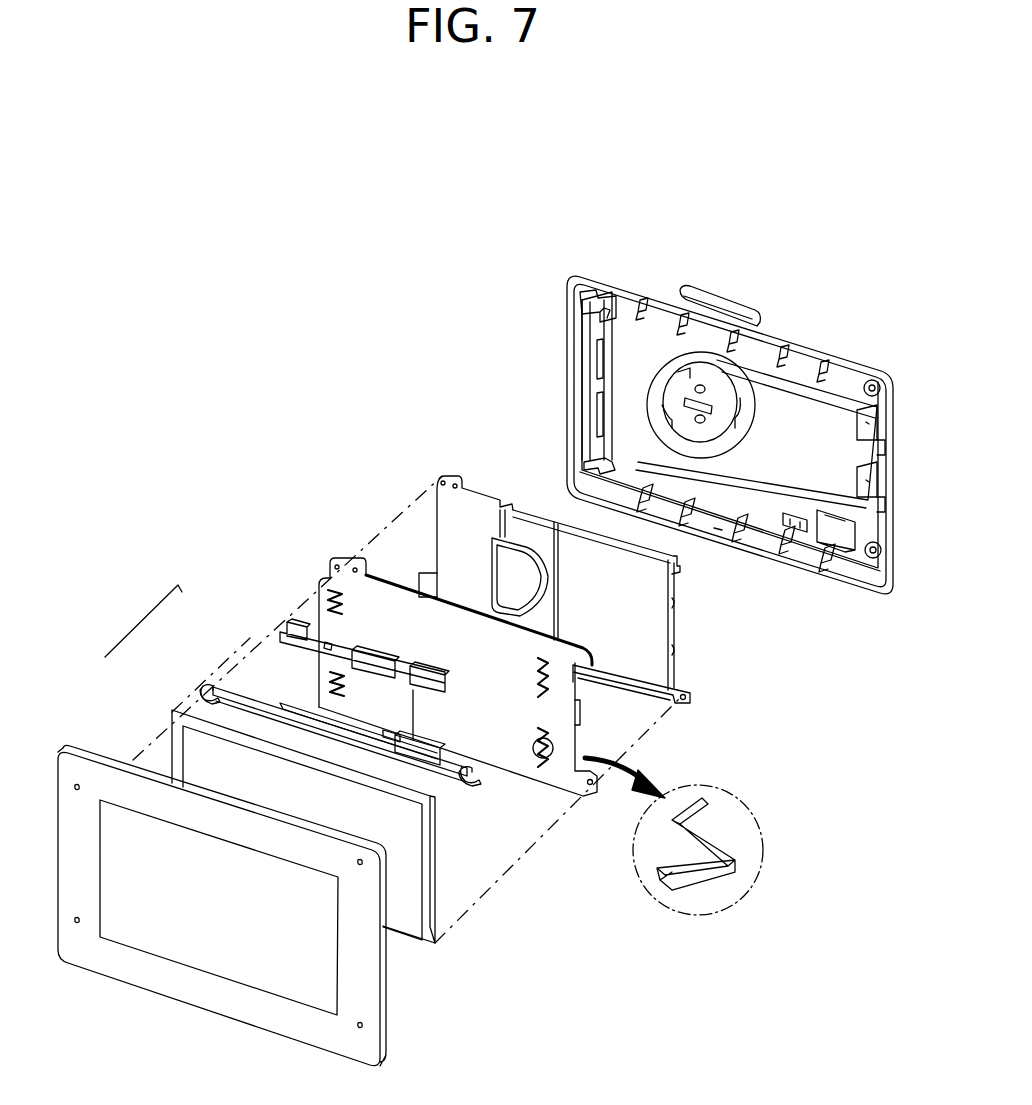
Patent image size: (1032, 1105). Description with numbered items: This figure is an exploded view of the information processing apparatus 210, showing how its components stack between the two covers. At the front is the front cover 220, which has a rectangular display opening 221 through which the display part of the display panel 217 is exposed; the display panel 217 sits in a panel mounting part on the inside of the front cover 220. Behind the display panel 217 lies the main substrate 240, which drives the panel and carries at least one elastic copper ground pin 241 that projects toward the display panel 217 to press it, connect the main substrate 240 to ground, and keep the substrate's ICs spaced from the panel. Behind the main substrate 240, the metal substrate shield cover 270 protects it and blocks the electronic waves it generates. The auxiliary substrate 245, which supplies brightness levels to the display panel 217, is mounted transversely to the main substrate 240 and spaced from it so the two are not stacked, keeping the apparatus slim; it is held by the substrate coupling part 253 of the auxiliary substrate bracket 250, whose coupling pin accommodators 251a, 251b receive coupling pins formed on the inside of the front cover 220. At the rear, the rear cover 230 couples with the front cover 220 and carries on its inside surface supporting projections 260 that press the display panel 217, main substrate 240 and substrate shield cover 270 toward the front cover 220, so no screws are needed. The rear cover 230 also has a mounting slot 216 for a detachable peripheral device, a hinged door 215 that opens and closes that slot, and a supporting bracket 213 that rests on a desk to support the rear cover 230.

The information processing apparatus 210 is at (200, 308).
The supporting bracket 213 is at (700, 300).
The door 215 is at (587, 322).
The mounting slot 216 is at (597, 415).
The display panel 217 is at (437, 910).
The front cover 220 is at (280, 1044).
The display opening 221 is at (190, 956).
The rear cover 230 is at (596, 375).
The main substrate 240 is at (582, 718).
The ground pin 241 is at (735, 846).
The auxiliary substrate 245 is at (280, 634).
The auxiliary substrate bracket 250 is at (138, 616).
The coupling pin accommodator 251a is at (205, 690).
The coupling pin accommodator 251b is at (465, 778).
The substrate coupling part 253 is at (283, 700).
The supporting projection 260 is at (784, 342).
The substrate shield cover 270 is at (658, 622).